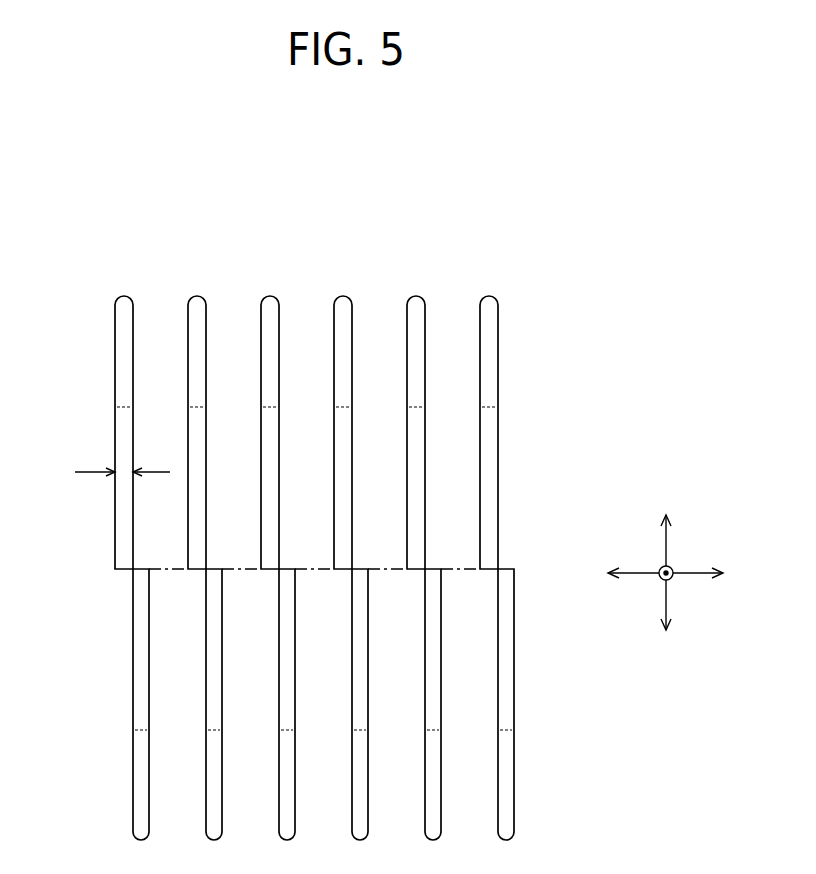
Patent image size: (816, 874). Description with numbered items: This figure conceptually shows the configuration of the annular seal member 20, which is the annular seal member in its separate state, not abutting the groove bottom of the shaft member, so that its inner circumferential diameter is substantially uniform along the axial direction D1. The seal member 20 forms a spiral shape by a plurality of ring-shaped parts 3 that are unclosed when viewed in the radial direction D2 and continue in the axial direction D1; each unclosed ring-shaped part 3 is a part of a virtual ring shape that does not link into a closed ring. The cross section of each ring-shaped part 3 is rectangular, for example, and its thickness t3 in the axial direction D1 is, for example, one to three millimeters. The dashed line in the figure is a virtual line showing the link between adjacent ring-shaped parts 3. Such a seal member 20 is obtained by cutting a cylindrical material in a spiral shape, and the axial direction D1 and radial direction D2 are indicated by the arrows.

The annular seal member 20 is at (83, 155).
The ring-shaped part 3 is at (124, 296).
The thickness t3 is at (122, 459).
The axial direction D1 is at (688, 577).
The radial direction D2 is at (667, 553).